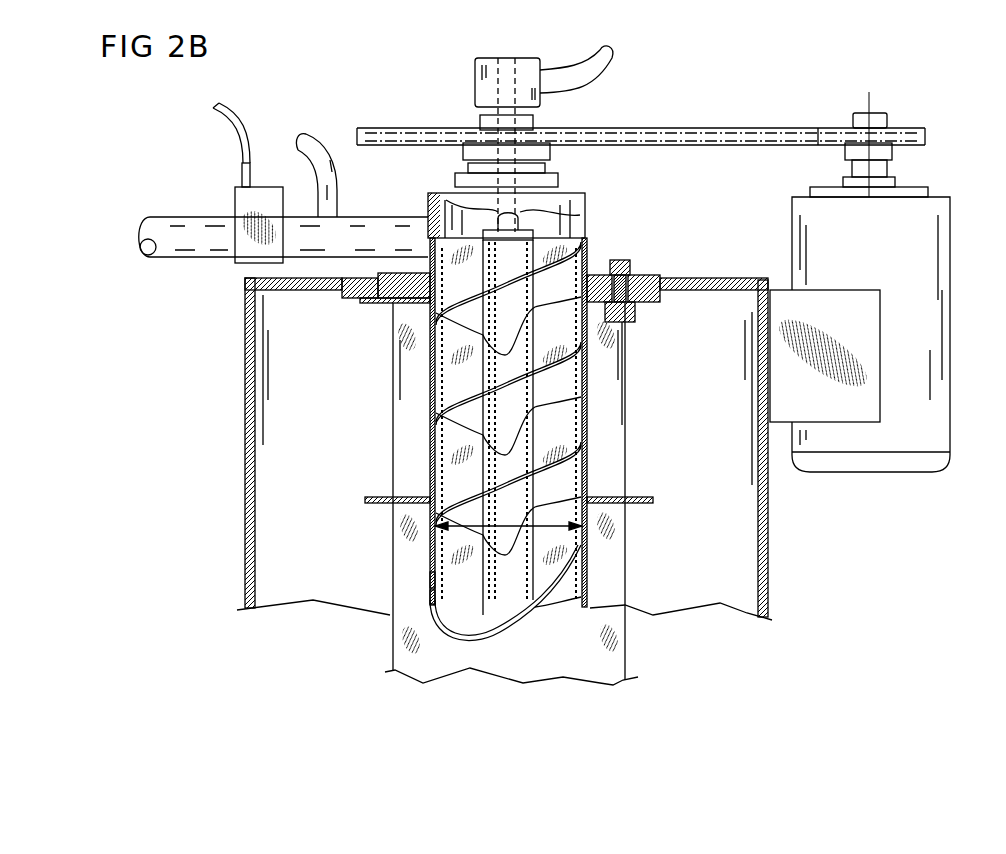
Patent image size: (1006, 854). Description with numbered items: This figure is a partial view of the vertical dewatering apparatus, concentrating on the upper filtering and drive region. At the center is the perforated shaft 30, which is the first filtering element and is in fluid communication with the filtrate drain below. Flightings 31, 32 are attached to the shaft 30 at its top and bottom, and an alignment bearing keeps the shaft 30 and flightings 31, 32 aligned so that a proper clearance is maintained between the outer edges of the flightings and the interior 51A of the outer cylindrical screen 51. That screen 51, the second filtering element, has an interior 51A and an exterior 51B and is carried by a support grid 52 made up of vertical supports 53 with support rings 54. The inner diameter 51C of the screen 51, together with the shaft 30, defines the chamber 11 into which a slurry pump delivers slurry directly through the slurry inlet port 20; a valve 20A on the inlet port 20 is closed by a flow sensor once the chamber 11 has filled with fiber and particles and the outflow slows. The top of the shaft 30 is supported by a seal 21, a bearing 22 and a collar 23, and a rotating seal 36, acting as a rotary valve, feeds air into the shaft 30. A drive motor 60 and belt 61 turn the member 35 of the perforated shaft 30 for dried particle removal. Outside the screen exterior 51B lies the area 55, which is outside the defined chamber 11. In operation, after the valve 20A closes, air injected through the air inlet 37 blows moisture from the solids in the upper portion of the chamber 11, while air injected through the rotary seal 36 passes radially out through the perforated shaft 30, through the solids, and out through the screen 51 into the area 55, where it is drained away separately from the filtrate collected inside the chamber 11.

The chamber 11 is at (577, 272).
The slurry inlet port 20 is at (162, 213).
The valve 20A is at (245, 203).
The seal 21 is at (453, 183).
The bearing 22 is at (558, 180).
The collar 23 is at (545, 168).
The perforated shaft 30 is at (358, 494).
The flighting 31 is at (447, 340).
The flighting 32 is at (457, 423).
The member 35 is at (610, 133).
The rotating seal 36 is at (483, 83).
The air inlet 37 is at (312, 133).
The outer cylindrical screen 51 is at (430, 477).
The interior 51A is at (433, 580).
The exterior 51B is at (437, 647).
The inner diameter 51C is at (505, 527).
The support grid 52 is at (405, 535).
The vertical supports 53 is at (405, 390).
The support rings 54 is at (365, 500).
The area 55 is at (705, 575).
The drive motor 60 is at (887, 433).
The belt 61 is at (758, 127).